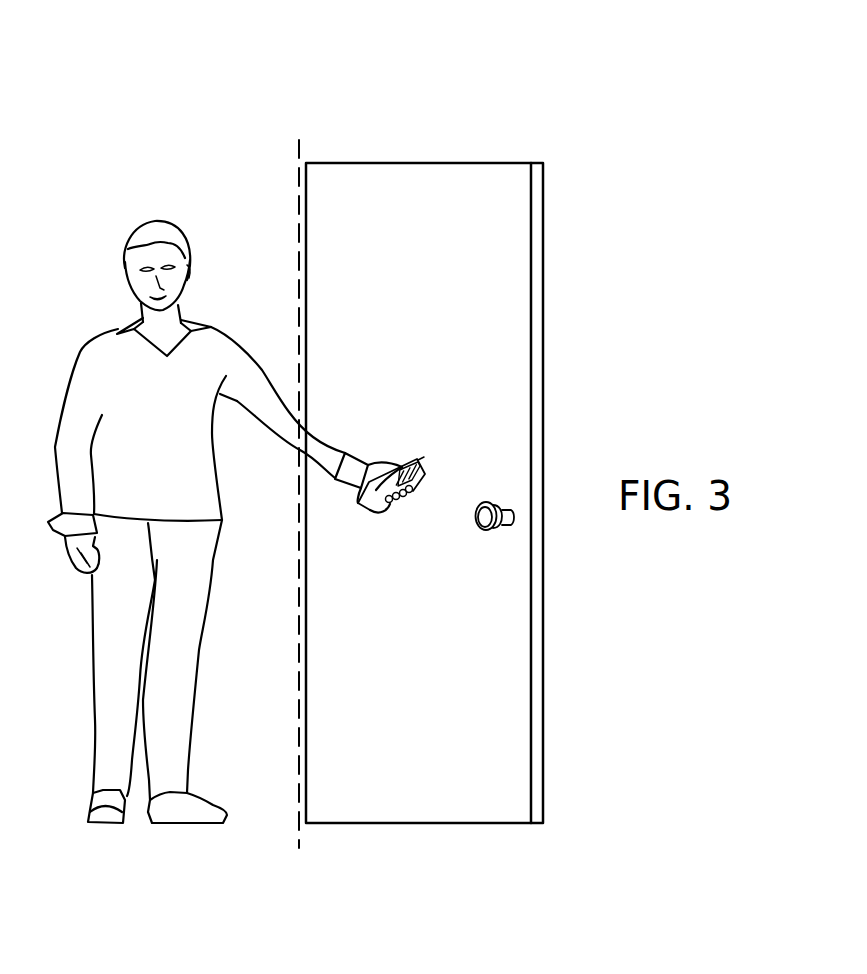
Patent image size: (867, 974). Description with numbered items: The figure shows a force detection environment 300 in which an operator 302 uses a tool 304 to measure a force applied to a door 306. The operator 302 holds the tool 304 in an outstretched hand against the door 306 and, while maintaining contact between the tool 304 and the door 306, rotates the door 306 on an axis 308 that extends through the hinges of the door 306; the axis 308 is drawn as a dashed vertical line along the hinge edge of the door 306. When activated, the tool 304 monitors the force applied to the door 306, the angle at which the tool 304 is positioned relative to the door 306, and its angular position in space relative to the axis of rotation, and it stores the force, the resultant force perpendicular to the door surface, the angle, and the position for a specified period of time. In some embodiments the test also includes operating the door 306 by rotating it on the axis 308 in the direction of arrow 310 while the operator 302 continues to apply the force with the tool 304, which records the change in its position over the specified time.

The force detection environment 300 is at (522, 88).
The operator 302 is at (122, 246).
The tool 304 is at (412, 457).
The door 306 is at (417, 162).
The axis 308 is at (298, 142).
The arrow 310 is at (487, 531).